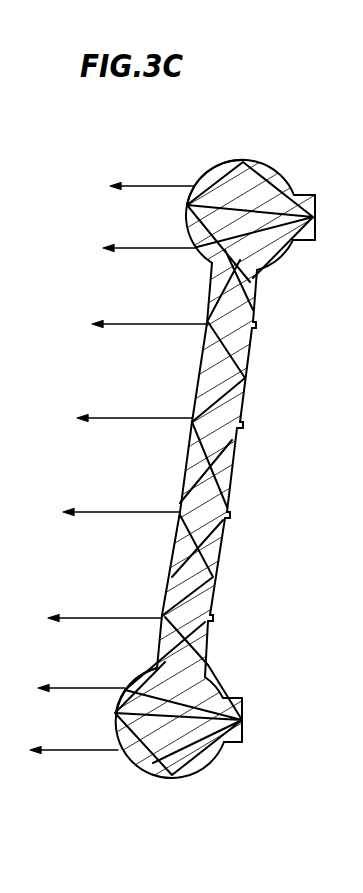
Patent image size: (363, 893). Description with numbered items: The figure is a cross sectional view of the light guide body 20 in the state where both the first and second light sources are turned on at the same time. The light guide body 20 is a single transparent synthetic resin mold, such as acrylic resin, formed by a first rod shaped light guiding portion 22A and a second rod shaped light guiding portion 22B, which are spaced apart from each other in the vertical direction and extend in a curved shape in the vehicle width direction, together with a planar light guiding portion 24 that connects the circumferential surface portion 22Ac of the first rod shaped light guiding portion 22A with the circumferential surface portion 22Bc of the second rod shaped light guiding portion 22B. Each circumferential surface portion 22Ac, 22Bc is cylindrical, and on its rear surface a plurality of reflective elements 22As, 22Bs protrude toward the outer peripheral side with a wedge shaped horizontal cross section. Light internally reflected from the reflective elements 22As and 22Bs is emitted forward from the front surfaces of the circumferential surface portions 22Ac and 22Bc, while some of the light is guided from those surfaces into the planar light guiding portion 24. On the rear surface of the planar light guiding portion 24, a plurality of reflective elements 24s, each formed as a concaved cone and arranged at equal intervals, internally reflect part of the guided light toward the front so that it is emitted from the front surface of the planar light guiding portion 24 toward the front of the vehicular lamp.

The light guide body 20 is at (160, 302).
The first rod shaped light guiding portion 22A is at (200, 164).
The circumferential surface portion of the first rod shaped light guiding portion 22Ac is at (253, 162).
The reflective elements of the first rod shaped light guiding portion 22As is at (315, 228).
The planar light guiding portion 24 is at (188, 387).
The reflective elements of the planar light guiding portion 24s is at (222, 517).
The second rod shaped light guiding portion 22B is at (118, 677).
The circumferential surface portion of the second rod shaped light guiding portion 22Bc is at (222, 687).
The reflective elements of the second rod shaped light guiding portion 22Bs is at (243, 723).